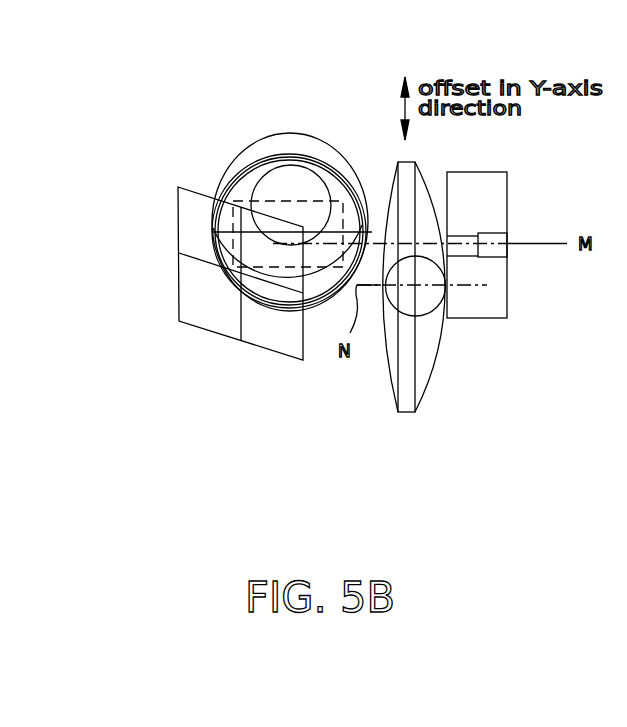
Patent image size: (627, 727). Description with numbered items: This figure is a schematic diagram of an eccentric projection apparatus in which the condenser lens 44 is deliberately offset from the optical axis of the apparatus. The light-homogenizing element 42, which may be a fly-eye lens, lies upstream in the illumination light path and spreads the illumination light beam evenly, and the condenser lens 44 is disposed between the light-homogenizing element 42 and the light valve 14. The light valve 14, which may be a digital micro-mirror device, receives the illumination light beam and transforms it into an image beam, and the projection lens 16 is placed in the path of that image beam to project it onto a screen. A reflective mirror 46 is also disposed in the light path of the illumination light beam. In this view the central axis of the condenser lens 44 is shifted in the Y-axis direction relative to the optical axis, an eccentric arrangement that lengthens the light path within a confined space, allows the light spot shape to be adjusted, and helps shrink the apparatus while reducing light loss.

The light valve 14 is at (335, 267).
The projection lens 16 is at (288, 133).
The light-homogenizing element 42 is at (475, 320).
The condenser lens 44 is at (420, 172).
The reflective mirror 46 is at (178, 228).